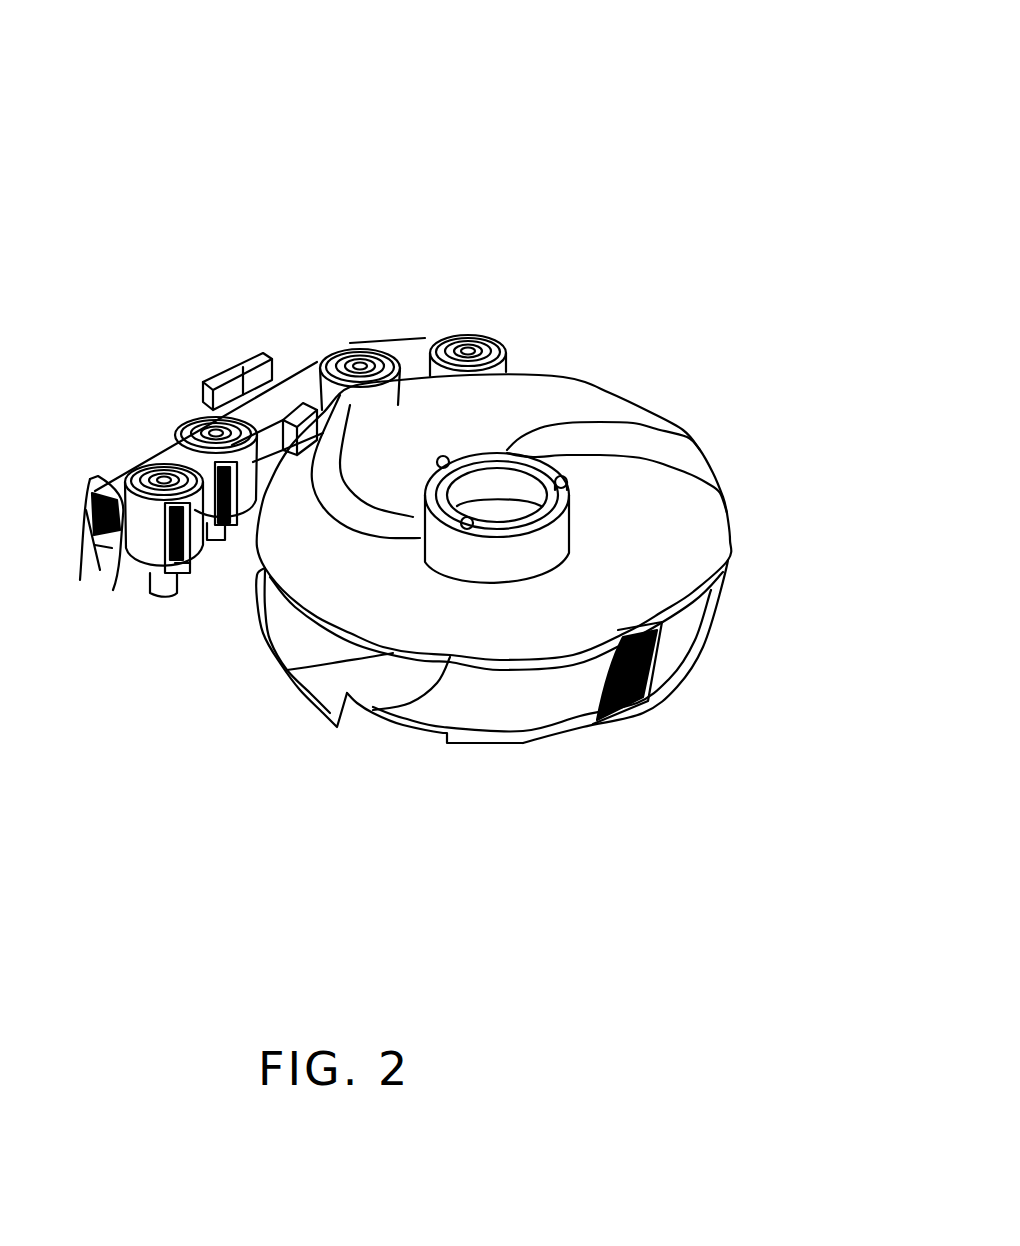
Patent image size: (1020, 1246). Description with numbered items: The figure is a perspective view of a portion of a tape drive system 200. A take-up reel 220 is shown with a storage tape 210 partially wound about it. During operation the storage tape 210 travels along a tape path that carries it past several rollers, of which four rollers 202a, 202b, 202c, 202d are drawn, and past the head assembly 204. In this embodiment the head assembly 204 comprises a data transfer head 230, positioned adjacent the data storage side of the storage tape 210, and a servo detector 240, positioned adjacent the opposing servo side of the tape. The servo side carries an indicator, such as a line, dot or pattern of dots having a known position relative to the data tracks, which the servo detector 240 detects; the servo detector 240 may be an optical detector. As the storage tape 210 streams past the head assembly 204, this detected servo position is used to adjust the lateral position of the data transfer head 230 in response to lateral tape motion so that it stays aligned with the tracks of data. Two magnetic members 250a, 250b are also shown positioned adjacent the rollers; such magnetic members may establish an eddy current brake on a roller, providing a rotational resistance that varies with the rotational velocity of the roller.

The tape drive system 200 is at (783, 100).
The roller 202a is at (126, 558).
The roller 202b is at (182, 418).
The roller 202c is at (368, 338).
The roller 202d is at (487, 357).
The head assembly 204 is at (270, 290).
The storage tape 210 is at (430, 333).
The take-up reel 220 is at (658, 418).
The data transfer head 230 is at (241, 350).
The servo detector 240 is at (316, 442).
The magnetic member 250a is at (190, 593).
The magnetic member 250b is at (237, 525).